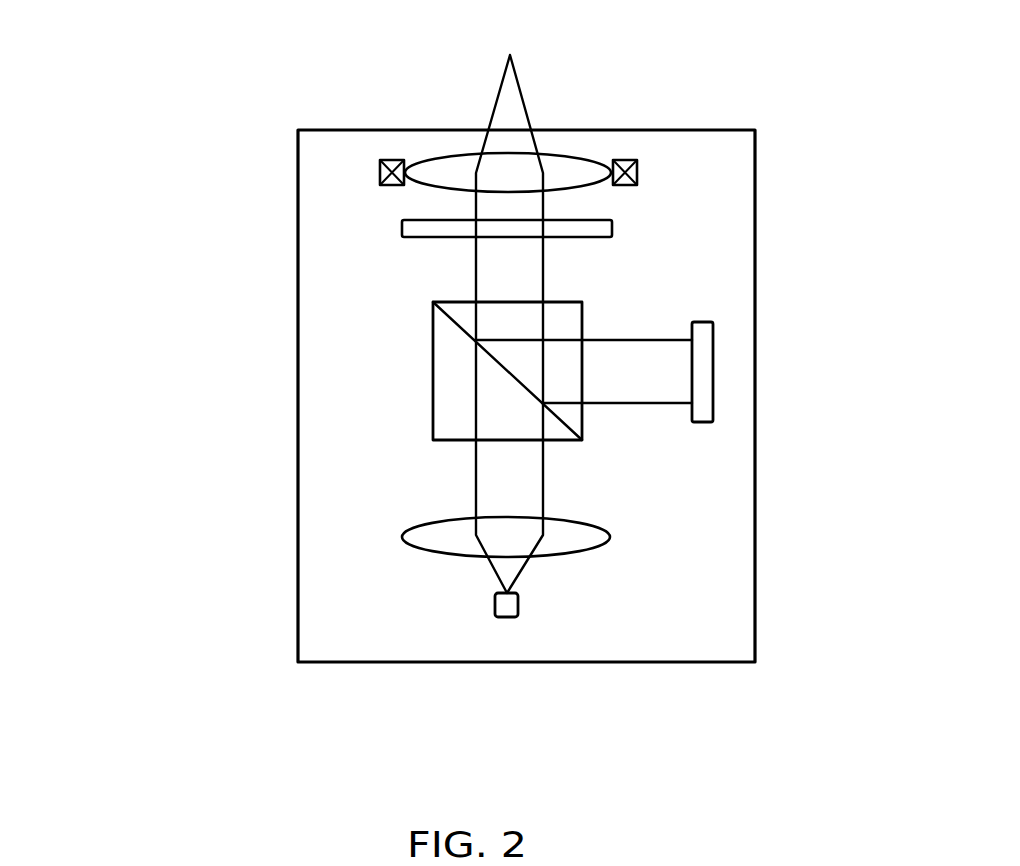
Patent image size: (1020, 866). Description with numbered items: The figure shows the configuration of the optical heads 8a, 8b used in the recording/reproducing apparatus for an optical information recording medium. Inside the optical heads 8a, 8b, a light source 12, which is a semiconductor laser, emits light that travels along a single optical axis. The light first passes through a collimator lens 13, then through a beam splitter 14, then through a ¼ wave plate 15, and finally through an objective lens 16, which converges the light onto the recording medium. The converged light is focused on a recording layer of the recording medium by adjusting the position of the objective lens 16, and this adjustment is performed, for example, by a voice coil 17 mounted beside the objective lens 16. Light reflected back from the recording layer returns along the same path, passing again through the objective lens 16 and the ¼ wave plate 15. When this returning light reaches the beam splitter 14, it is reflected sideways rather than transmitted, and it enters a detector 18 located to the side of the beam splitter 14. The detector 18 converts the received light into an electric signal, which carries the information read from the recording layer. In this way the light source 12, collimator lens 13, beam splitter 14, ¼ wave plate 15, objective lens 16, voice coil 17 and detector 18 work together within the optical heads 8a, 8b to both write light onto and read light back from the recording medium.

The optical head 8a is at (411, 396).
The optical head 8b is at (298, 250).
The light source 12 is at (512, 617).
The collimator lens 13 is at (610, 537).
The beam splitter 14 is at (582, 317).
The ¼ wave plate 15 is at (612, 230).
The objective lens 16 is at (583, 155).
The voice coil 17 is at (637, 162).
The detector 18 is at (713, 375).